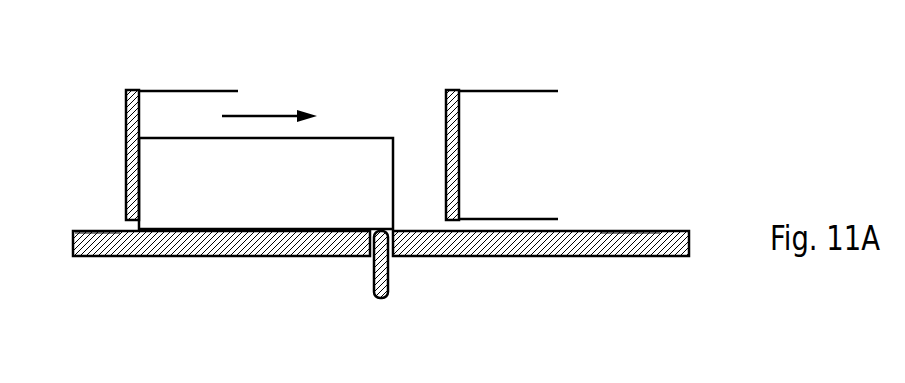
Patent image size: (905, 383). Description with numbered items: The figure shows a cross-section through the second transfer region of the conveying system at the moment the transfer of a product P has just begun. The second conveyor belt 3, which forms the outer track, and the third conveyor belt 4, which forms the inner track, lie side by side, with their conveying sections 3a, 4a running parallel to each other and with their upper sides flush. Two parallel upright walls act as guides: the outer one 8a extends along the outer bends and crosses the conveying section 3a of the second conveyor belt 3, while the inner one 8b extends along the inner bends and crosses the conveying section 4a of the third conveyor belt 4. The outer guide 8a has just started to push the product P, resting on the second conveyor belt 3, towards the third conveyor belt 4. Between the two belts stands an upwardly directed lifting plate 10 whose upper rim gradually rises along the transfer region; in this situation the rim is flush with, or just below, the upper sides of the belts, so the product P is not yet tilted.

The second conveyor belt 3 is at (179, 256).
The conveying section of the second conveyor belt 3a is at (107, 231).
The third conveyor belt 4 is at (510, 257).
The conveying section of the third conveyor belt 4a is at (620, 232).
The outer second guide 8a is at (131, 91).
The inner second guide 8b is at (451, 91).
The product P is at (262, 218).
The plate 10 is at (376, 276).